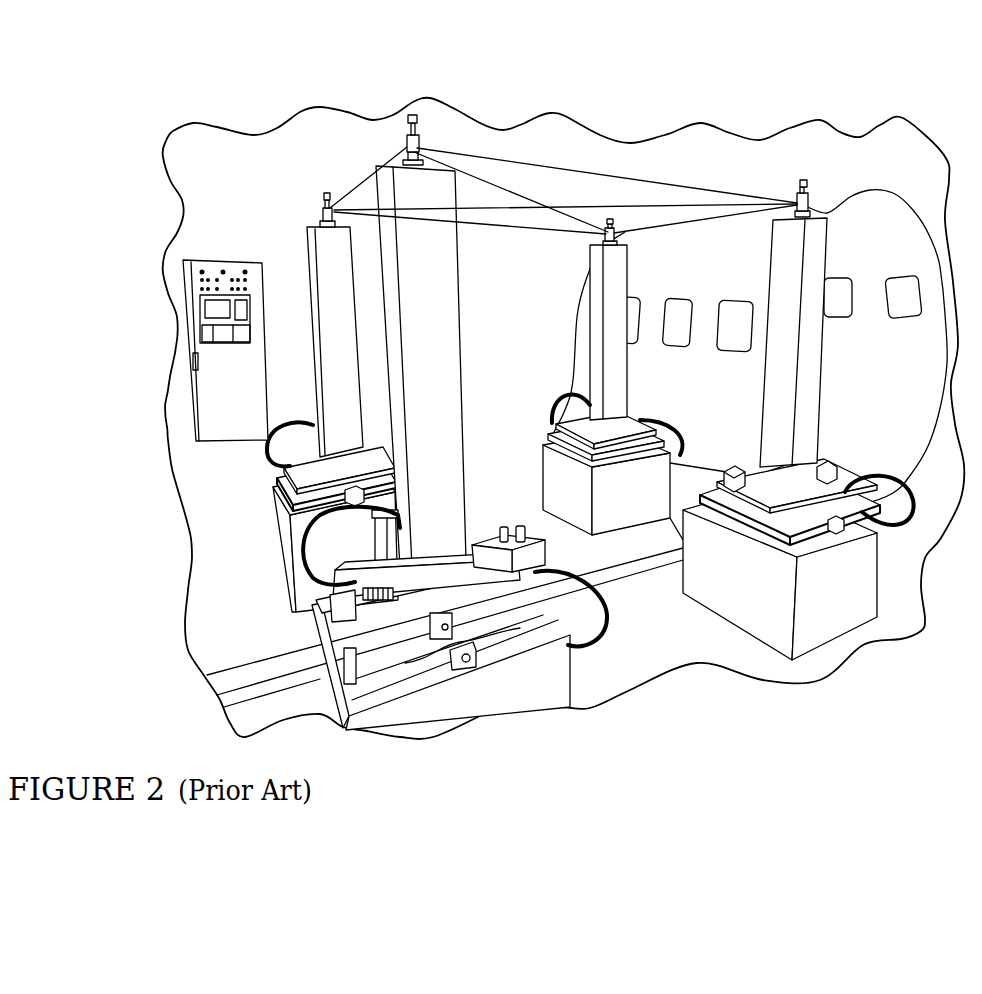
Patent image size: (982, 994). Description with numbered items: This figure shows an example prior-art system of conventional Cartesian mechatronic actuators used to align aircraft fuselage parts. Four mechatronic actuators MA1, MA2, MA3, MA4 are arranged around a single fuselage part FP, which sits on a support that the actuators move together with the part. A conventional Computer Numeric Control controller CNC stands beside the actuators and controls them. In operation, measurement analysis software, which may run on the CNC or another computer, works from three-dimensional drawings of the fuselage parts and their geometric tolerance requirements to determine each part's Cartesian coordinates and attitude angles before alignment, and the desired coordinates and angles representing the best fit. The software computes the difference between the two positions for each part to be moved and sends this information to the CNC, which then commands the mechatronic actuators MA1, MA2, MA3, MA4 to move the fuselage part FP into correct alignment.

The fuselage part FP is at (840, 186).
The Cartesian mechatronic actuator MA1 is at (798, 420).
The Cartesian mechatronic actuator MA2 is at (612, 377).
The Cartesian mechatronic actuator MA3 is at (455, 422).
The Cartesian mechatronic actuator MA4 is at (280, 548).
The Computer Numeric Control controller CNC is at (225, 350).